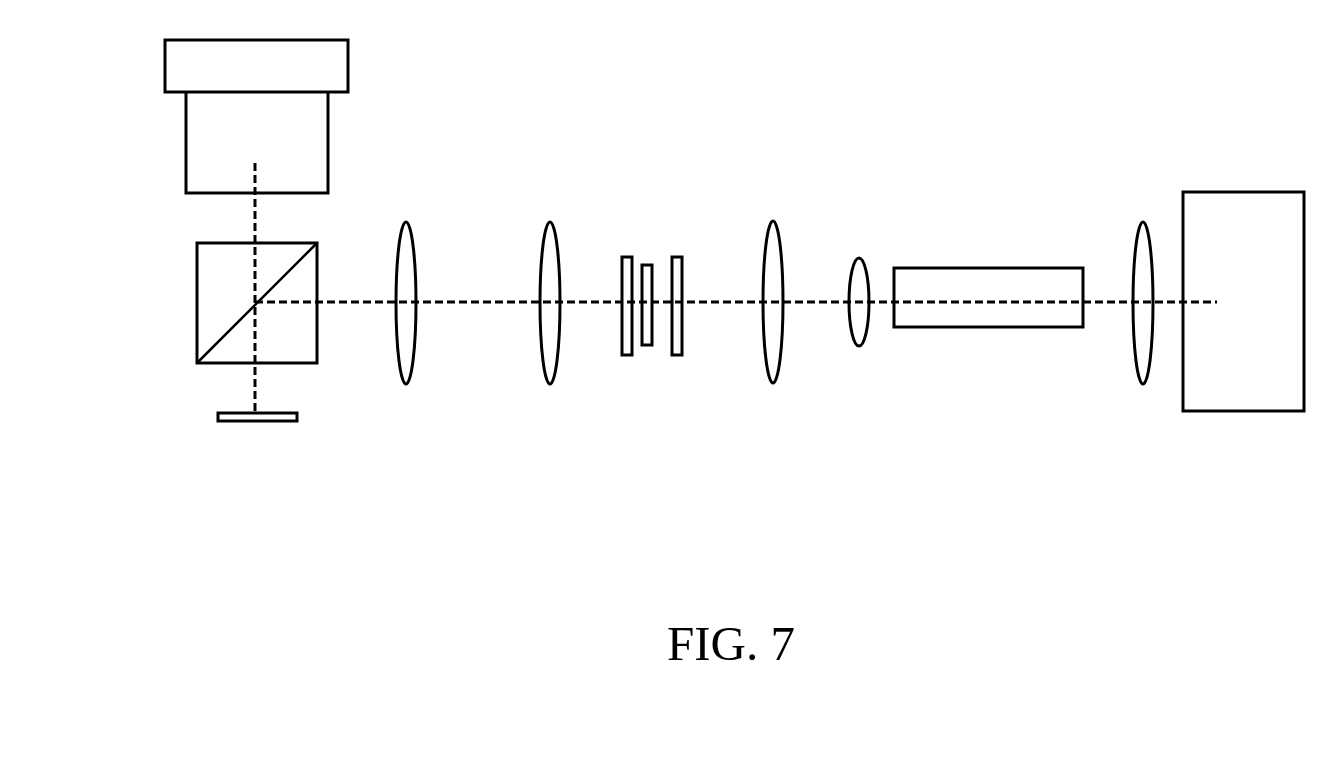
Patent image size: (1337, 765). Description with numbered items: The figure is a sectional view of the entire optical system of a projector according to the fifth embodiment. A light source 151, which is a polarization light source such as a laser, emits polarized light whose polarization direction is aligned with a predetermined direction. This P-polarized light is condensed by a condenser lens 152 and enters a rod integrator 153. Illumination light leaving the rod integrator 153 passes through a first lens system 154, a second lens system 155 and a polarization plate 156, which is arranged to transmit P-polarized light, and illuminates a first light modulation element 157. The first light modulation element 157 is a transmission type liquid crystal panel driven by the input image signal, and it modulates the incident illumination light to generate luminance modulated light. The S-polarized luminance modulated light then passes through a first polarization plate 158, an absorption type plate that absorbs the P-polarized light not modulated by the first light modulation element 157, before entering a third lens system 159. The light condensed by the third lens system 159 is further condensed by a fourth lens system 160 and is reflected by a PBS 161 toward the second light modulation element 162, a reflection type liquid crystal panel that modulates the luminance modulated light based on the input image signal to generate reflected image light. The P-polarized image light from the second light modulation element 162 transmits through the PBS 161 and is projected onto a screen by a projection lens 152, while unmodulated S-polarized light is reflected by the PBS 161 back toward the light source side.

The light source 151 is at (1217, 210).
The condenser lens 152 is at (212, 110).
The rod integrator 153 is at (978, 310).
The first lens system 154 is at (860, 263).
The second lens system 155 is at (773, 242).
The polarization plate 156 is at (682, 347).
The first light modulation element 157 is at (652, 270).
The first polarization plate 158 is at (622, 257).
The third lens system 159 is at (552, 358).
The fourth lens system 160 is at (405, 348).
The PBS 161 is at (212, 280).
The second light modulation element 162 is at (243, 424).